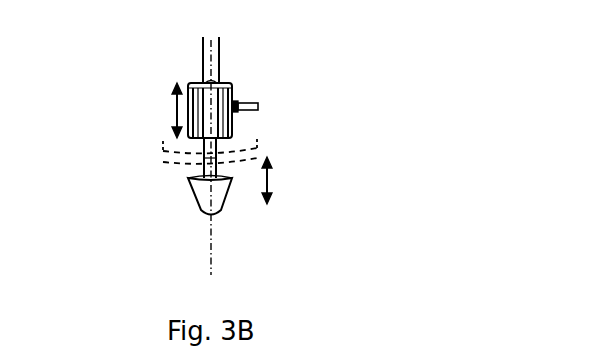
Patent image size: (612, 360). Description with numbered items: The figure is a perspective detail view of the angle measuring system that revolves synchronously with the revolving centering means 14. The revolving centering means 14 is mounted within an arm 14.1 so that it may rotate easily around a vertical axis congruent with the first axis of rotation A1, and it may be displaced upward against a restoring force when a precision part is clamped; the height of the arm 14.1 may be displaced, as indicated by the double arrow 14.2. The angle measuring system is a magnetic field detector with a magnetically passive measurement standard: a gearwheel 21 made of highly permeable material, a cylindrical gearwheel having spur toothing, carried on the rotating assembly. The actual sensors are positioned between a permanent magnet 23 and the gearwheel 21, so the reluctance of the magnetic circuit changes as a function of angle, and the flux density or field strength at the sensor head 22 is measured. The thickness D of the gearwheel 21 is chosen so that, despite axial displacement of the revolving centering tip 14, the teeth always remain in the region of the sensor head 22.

The revolving centering means 14 is at (198, 201).
The arm 14.1 is at (203, 52).
The double arrow 14.2 is at (270, 194).
The gearwheel 21 is at (232, 123).
The sensor head 22 is at (237, 101).
The permanent magnet 23 is at (256, 104).
The thickness of the gearwheel D is at (163, 110).
The first axis of rotation A1 is at (206, 173).